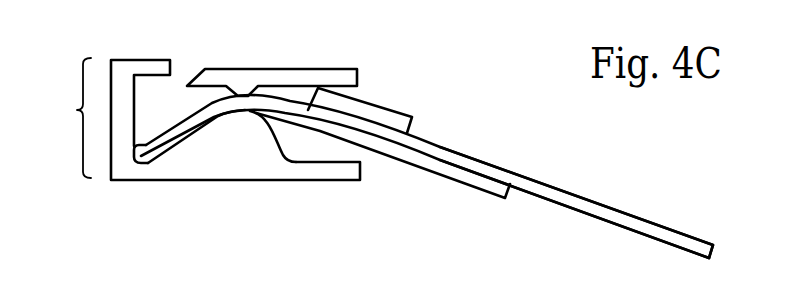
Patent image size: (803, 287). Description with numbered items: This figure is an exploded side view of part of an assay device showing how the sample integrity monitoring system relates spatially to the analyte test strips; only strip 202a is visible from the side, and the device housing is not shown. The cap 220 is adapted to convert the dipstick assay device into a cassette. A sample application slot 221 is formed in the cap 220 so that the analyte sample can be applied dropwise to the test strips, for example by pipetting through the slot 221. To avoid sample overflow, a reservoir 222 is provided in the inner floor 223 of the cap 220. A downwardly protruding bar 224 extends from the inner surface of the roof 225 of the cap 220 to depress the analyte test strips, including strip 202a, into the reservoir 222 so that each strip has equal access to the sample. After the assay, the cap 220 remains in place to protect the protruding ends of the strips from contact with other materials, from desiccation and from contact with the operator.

The cap 220 is at (76, 110).
The sample application slot 221 is at (185, 68).
The reservoir 222 is at (158, 93).
The inner floor 223 is at (301, 163).
The downwardly protruding bar 224 is at (243, 82).
The roof 225 is at (346, 80).
The analyte test strip 202a is at (655, 222).